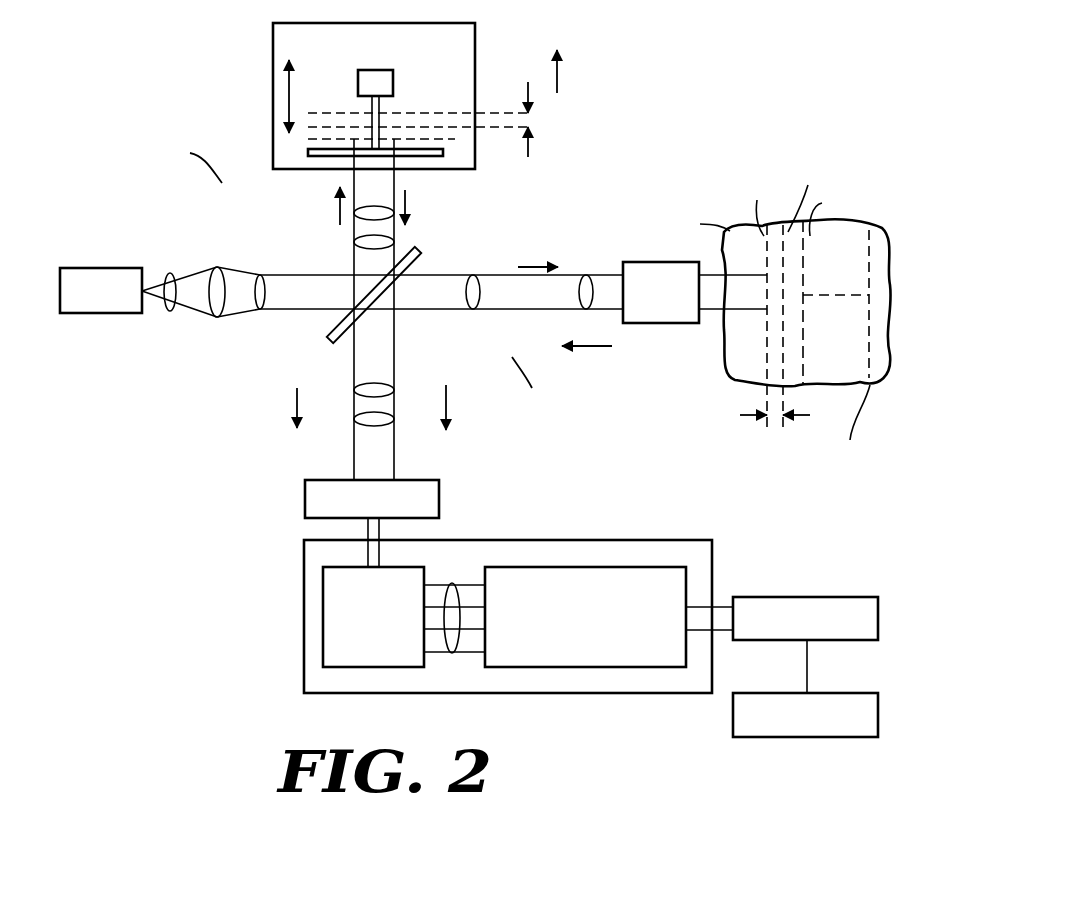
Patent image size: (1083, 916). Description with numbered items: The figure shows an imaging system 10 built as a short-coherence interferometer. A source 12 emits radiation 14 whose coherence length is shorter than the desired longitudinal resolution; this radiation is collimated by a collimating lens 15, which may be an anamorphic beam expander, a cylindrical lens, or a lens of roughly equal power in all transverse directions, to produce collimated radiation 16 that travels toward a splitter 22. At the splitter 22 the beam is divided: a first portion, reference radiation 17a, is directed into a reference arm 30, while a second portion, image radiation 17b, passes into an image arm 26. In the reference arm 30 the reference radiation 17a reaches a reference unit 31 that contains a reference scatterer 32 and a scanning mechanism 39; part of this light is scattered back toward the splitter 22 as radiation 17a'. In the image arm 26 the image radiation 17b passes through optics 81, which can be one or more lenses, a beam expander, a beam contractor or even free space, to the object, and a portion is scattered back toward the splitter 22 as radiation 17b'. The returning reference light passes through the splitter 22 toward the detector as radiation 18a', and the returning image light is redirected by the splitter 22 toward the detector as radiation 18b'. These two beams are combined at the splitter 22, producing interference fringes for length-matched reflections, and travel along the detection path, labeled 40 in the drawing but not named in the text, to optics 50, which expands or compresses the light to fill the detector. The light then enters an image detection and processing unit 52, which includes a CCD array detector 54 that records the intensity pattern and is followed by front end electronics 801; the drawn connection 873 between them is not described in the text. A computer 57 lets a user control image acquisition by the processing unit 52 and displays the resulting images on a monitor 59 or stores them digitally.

The imaging system 10 is at (678, 103).
The source 12 is at (103, 268).
The radiation 14 is at (172, 272).
The collimating lens 15 is at (218, 266).
The collimated radiation 16 is at (263, 272).
The reference radiation 17a is at (336, 213).
The radiation scattered from reference scatterer 17a' is at (410, 229).
The image radiation 17b is at (494, 273).
The radiation scattered from object 17b' is at (560, 307).
The reference radiation toward detector 18a' is at (345, 392).
The image radiation toward detector 18b' is at (400, 407).
The splitter 22 is at (421, 256).
The image arm 26 is at (500, 341).
The reference arm 30 is at (434, 195).
The reference unit 31 is at (476, 46).
The reference scatterer 32 is at (316, 158).
The scanning mechanism 39 is at (393, 83).
The detection beam 40 is at (399, 350).
The optics 50 is at (439, 497).
The image detection and processing unit 52 is at (500, 540).
The CCD array detector 54 is at (323, 650).
The computer 57 is at (822, 597).
The monitor 59 is at (733, 716).
The optics 81 is at (655, 323).
The front end electronics 801 is at (580, 567).
The signal connection 873 is at (452, 583).